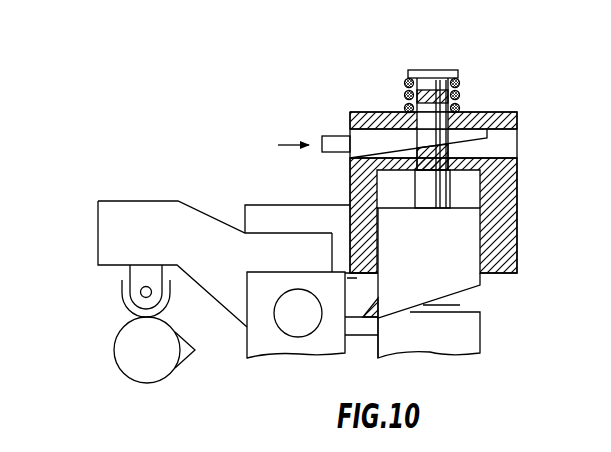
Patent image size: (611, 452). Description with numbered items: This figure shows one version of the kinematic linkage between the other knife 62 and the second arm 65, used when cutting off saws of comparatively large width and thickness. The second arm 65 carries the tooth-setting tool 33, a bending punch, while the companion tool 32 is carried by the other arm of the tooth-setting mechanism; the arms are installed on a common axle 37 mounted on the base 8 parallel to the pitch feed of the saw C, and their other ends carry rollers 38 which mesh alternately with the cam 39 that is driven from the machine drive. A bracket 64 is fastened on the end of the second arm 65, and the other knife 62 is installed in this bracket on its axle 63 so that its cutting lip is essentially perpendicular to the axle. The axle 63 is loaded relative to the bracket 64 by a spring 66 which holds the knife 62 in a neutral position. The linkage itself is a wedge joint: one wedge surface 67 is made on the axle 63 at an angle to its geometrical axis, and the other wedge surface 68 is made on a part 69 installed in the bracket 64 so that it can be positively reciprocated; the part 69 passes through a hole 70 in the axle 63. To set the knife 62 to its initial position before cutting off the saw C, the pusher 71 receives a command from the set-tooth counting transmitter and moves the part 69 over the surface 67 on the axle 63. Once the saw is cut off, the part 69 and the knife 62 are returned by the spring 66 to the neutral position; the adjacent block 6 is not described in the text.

The support block 6 is at (467, 335).
The base 8 is at (265, 337).
The tooth-setting tool 32 is at (362, 326).
The tooth-setting tool 33 is at (355, 271).
The common axle 37 is at (290, 303).
The roller 38 is at (123, 308).
The cam 39 is at (138, 362).
The other knife 62 is at (466, 276).
The axle 63 is at (437, 200).
The bracket 64 is at (268, 215).
The second arm 65 is at (137, 222).
The spring 66 is at (461, 82).
The wedge surface 67 is at (416, 146).
The wedge surface 68 is at (474, 147).
The part 69 is at (362, 140).
The hole 70 is at (460, 104).
The pusher 71 is at (328, 143).
The saw C is at (464, 303).